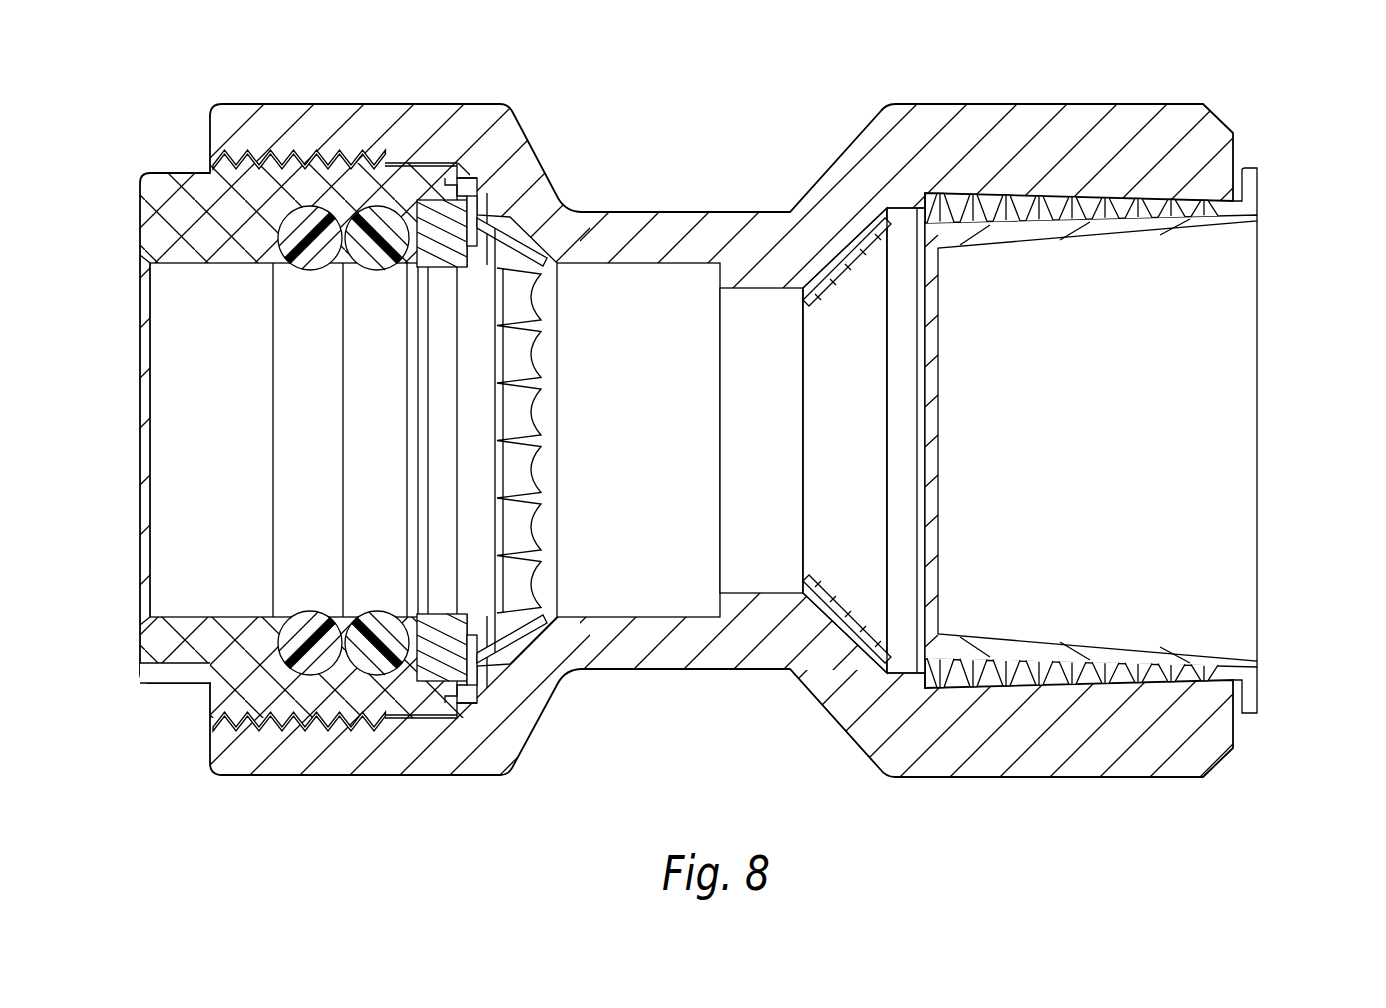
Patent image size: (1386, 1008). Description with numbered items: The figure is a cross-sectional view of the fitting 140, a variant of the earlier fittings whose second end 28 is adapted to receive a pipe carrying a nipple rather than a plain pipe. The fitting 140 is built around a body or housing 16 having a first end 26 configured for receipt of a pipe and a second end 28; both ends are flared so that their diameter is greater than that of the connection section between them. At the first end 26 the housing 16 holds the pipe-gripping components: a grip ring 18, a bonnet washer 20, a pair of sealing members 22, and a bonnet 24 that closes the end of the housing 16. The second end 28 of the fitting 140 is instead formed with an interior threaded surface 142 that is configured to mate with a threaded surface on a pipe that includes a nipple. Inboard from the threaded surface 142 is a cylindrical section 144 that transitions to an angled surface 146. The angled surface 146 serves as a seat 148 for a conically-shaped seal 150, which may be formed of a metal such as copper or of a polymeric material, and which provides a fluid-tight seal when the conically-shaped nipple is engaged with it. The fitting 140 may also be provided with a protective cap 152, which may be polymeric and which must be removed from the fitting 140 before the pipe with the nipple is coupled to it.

The body or housing 16 is at (632, 212).
The grip ring 18 is at (533, 451).
The bonnet washer 20 is at (440, 652).
The sealing member 22 is at (302, 472).
The bonnet 24 is at (177, 653).
The first end 26 is at (426, 106).
The second end 28 is at (1155, 105).
The fitting 140 is at (967, 73).
The interior threaded surface 142 is at (1135, 687).
The cylindrical section 144 is at (917, 660).
The angled surface 146 is at (837, 615).
The seat 148 is at (842, 249).
The conically-shaped seal 150 is at (863, 415).
The protective cap 152 is at (1143, 373).